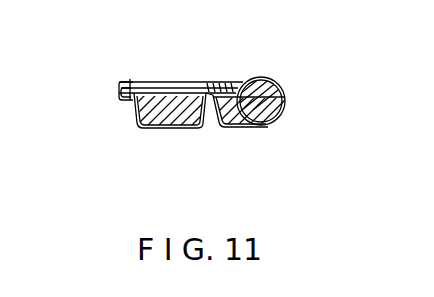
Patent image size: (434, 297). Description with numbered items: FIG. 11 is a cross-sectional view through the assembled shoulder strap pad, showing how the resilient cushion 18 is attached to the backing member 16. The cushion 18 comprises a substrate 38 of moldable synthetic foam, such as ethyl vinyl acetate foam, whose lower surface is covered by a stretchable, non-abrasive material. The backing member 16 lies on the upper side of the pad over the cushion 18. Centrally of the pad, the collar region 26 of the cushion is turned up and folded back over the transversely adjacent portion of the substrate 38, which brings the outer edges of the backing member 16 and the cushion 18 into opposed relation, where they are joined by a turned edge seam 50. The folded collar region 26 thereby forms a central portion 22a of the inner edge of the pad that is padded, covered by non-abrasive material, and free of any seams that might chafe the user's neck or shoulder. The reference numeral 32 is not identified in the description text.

The backing member 16 is at (170, 82).
The turned edge seam 50 is at (117, 93).
The resilient cushion 18 is at (165, 130).
The web between troughs 32 is at (210, 120).
The substrate 38 is at (268, 127).
The collar region 26 is at (270, 76).
The central portion of the inner edge 22a is at (290, 103).